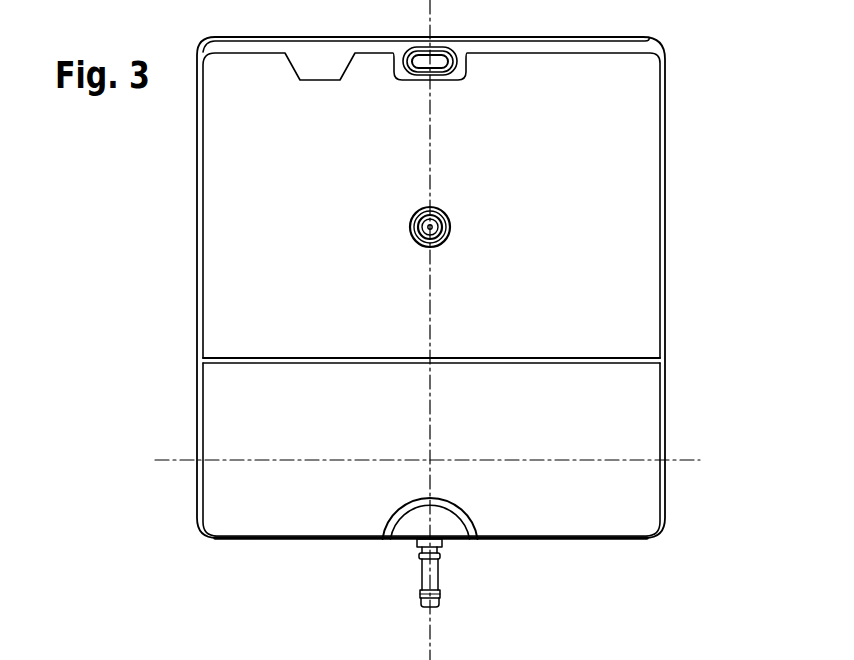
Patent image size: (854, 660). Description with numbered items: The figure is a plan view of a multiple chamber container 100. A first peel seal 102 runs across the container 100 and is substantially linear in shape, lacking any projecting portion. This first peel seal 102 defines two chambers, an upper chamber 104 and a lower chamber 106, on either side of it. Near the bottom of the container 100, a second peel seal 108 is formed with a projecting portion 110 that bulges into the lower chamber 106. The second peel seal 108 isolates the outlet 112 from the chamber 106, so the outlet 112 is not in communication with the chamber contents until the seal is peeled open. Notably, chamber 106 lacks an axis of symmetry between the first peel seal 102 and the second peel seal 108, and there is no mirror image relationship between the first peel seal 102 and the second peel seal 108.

The container 100 is at (676, 60).
The first peel seal 102 is at (580, 357).
The chamber 104 is at (258, 237).
The chamber 106 is at (257, 418).
The second peel seal 108 is at (383, 521).
The projecting portion 110 is at (443, 490).
The outlet 112 is at (440, 573).